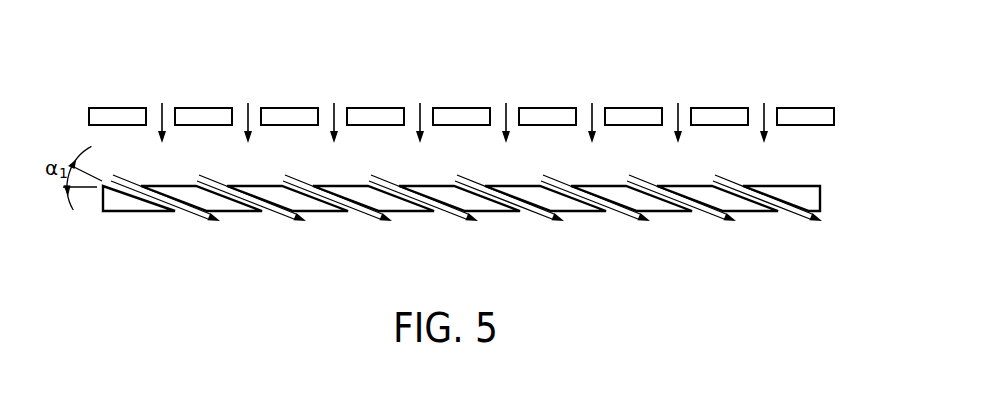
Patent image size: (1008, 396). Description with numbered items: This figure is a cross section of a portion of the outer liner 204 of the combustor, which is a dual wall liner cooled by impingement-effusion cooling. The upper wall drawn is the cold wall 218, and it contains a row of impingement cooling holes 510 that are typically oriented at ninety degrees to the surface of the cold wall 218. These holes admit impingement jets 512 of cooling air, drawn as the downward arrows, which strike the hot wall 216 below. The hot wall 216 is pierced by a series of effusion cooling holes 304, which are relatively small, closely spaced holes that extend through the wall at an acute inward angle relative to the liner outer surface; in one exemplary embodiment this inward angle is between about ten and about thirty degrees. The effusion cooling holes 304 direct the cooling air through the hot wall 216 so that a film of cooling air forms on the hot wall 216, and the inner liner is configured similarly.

The outer liner 204 is at (806, 78).
The cold wall 218 is at (542, 108).
The impingement cooling holes 510 is at (155, 108).
The impingement jets 512 is at (165, 105).
The effusion cooling holes 304 is at (132, 182).
The hot wall 216 is at (580, 212).